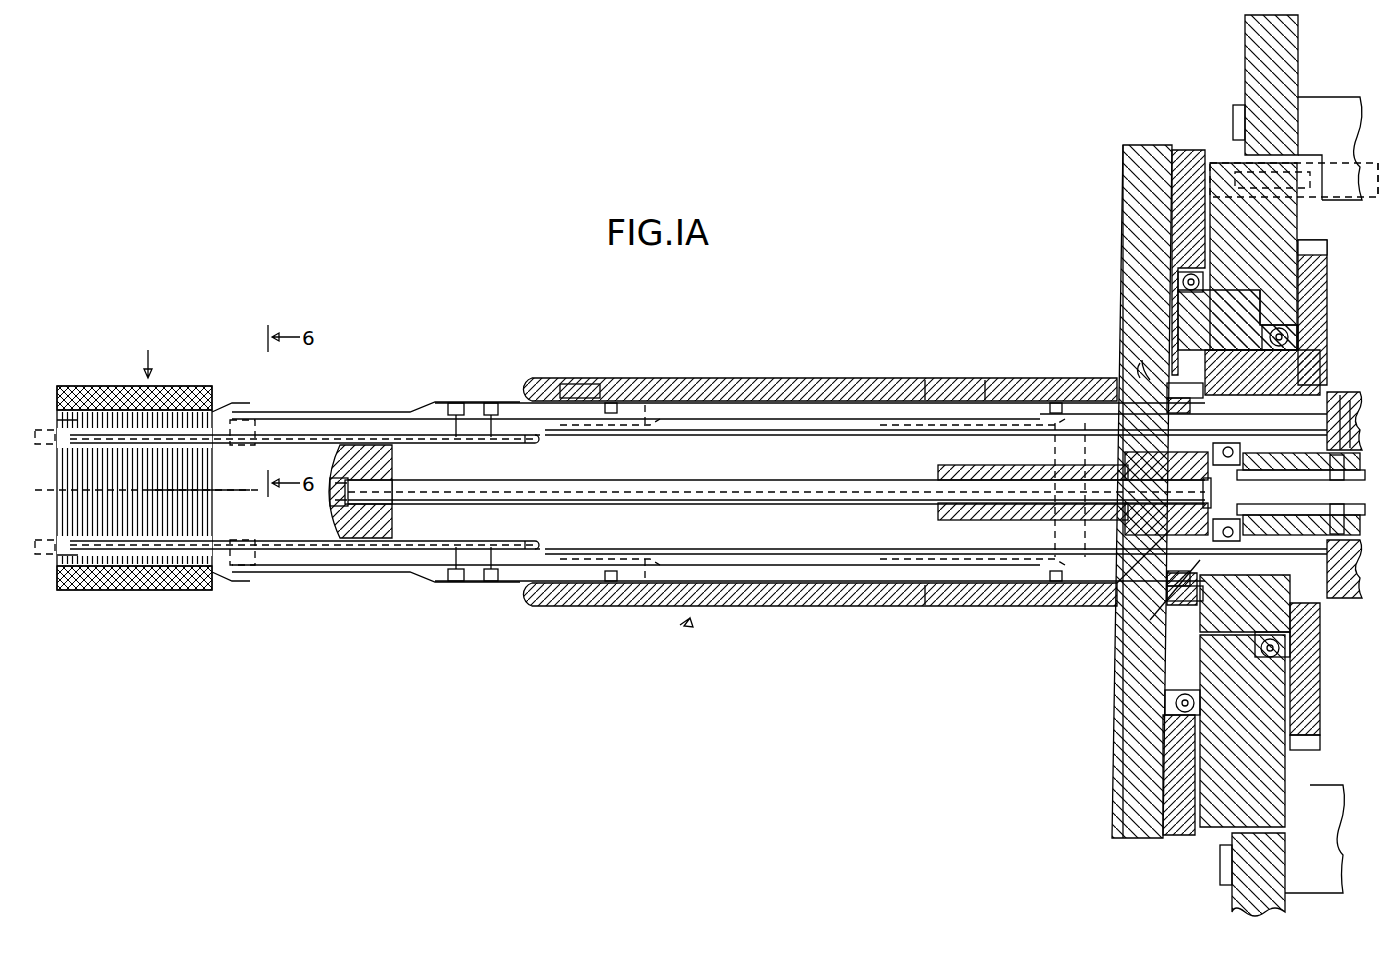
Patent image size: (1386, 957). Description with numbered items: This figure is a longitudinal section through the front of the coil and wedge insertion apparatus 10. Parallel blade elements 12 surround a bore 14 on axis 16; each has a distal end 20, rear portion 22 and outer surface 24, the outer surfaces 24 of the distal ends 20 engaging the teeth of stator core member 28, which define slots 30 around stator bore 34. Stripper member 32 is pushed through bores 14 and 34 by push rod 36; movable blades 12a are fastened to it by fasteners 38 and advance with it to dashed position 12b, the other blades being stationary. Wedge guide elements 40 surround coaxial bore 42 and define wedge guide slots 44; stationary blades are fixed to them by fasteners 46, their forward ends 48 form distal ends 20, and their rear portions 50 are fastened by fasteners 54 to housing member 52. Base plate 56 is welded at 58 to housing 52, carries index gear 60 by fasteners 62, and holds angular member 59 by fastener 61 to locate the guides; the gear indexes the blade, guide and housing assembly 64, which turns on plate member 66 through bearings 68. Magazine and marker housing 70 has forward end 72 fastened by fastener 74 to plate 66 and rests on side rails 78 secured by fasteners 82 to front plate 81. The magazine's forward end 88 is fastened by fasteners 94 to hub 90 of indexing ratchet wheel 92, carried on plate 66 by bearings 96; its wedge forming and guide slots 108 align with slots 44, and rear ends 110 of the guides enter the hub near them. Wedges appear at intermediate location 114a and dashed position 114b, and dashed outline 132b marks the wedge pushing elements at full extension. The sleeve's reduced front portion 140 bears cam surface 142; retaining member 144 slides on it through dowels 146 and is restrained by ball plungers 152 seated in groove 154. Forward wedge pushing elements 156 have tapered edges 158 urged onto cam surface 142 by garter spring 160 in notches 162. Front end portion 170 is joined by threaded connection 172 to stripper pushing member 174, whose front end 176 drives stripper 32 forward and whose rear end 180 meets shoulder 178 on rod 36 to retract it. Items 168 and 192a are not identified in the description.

The coil and wedge insertion apparatus 10 is at (770, 296).
The blade elements 12 is at (520, 452).
The movable blade elements 12a is at (265, 443).
The forward position of movable blade elements 12b is at (45, 444).
The bore 14 is at (318, 507).
The axis 16 is at (185, 484).
The distal ends 20 is at (118, 395).
The rear portions 22 is at (470, 444).
The outer surfaces 24 is at (310, 435).
The stator core member 28 is at (157, 351).
The slots 30 is at (70, 420).
The stripper member 32 is at (385, 470).
The bore 34 is at (134, 488).
The push rod 36 is at (735, 492).
The threaded fasteners 38 is at (368, 440).
The wedge guide elements 40 is at (487, 400).
The bore 42 is at (824, 473).
The wedge guide slots 44 is at (780, 425).
The threaded fasteners 46 is at (456, 402).
The forward ends 48 is at (238, 408).
The rear portions 50 is at (838, 425).
The housing member 52 is at (985, 380).
The threaded fasteners 54 is at (612, 378).
The base plate member 56 is at (1123, 213).
The welding 58 is at (1115, 383).
The angular member 59 is at (1152, 378).
The index gear 60 is at (1185, 150).
The threaded fastener 61 is at (1141, 378).
The threaded fasteners 62 is at (1140, 178).
The blade element, wedge guide element and housing assembly 64 is at (688, 622).
The plate member 66 is at (1252, 756).
The bearings 68 is at (1190, 698).
The wedge magazine and wedge marker housing 70 is at (1372, 200).
The forward end 72 is at (1308, 205).
The threaded fastener 74 is at (1240, 165).
The side rails 78 is at (1330, 100).
The front plate 81 is at (1250, 52).
The threaded fasteners 82 is at (1238, 105).
The forward end 88 is at (1325, 392).
The hub portion 90 is at (1235, 350).
The indexing ratchet wheel 92 is at (1320, 300).
The threaded fasteners 94 is at (1238, 320).
The bearings 96 is at (1290, 330).
The wedge forming and guide slots 108 is at (1352, 400).
The rear ends 110 is at (1340, 395).
The wedges at intermediate location 114a is at (930, 380).
The wedges at forward position 114b is at (660, 405).
The forward position of wedge pushing elements 132b is at (255, 422).
The reduced-diameter front end portion 140 is at (1325, 514).
The frusto-conical cam surface 142 is at (1270, 470).
The front pushing element retaining member 144 is at (1322, 600).
The dowels 146 is at (1354, 494).
The spring loaded ball plungers 152 is at (1340, 590).
The circumferential groove 154 is at (1352, 400).
The forward wedge pushing elements 156 is at (1180, 562).
The tapered inner edges 158 is at (1226, 466).
The garter spring 160 is at (1233, 452).
The notches 162 is at (1233, 534).
The sleeve 168 is at (1215, 443).
The front end portion 170 is at (1168, 532).
The threaded connection 172 is at (1130, 515).
The stripper pushing member 174 is at (1015, 512).
The front end 176 is at (940, 470).
The shoulder 178 is at (1205, 492).
The rear end 180 is at (1135, 470).
The seal 192a is at (1060, 453).